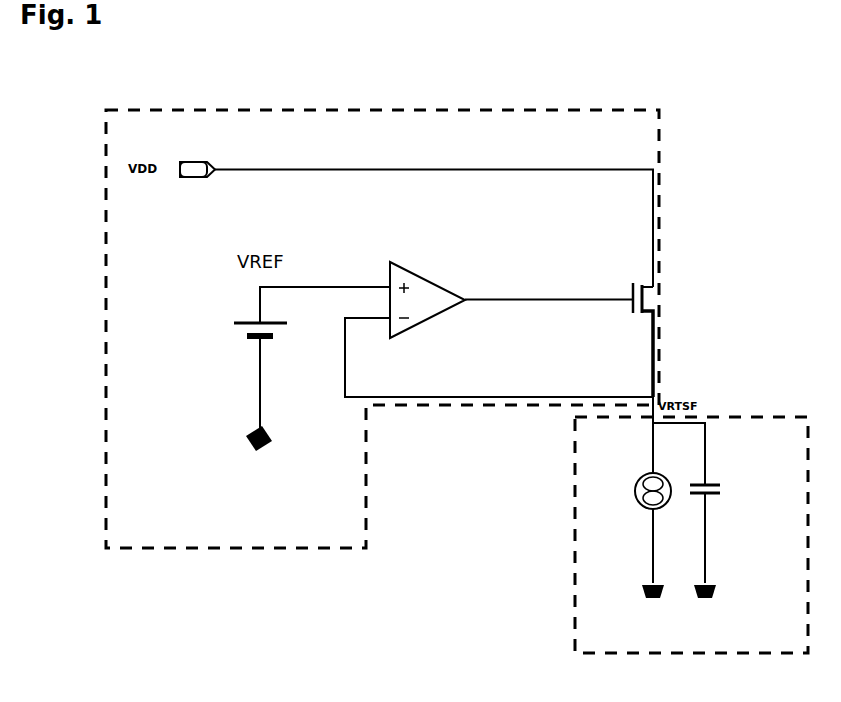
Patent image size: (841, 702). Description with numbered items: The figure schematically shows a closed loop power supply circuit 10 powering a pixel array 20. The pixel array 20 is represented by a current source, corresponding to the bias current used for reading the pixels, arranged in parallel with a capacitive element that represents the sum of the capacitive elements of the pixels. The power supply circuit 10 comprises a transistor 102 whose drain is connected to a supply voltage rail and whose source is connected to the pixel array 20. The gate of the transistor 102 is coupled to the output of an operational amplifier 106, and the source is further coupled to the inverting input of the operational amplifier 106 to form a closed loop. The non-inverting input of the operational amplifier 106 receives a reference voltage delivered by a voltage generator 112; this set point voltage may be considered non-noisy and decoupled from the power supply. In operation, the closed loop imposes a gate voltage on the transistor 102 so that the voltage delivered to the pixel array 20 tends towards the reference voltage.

The closed loop power supply circuit 10 is at (660, 152).
The pixel array 20 is at (575, 632).
The transistor 102 is at (674, 316).
The operational amplifier 106 is at (422, 273).
The voltage generator 112 is at (278, 335).